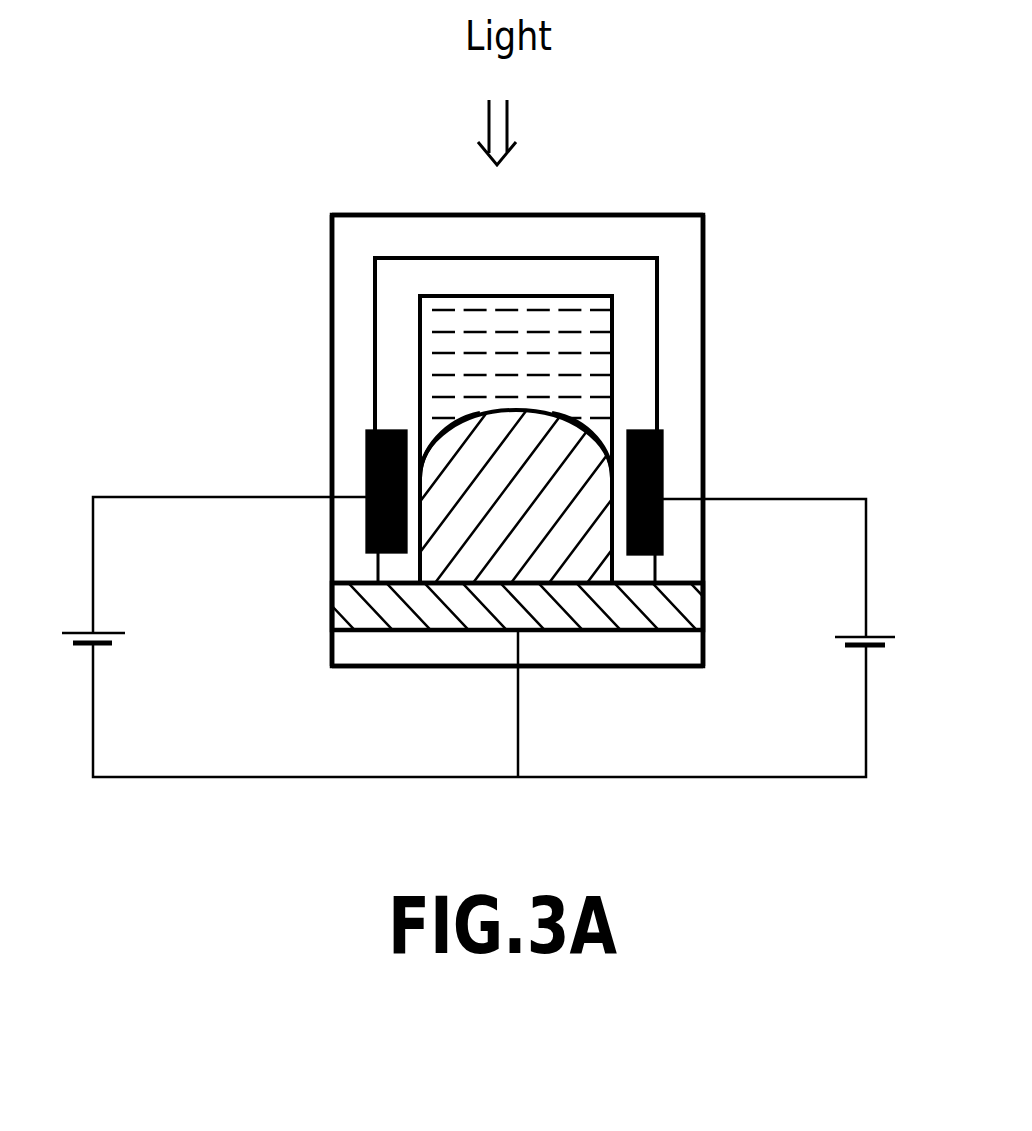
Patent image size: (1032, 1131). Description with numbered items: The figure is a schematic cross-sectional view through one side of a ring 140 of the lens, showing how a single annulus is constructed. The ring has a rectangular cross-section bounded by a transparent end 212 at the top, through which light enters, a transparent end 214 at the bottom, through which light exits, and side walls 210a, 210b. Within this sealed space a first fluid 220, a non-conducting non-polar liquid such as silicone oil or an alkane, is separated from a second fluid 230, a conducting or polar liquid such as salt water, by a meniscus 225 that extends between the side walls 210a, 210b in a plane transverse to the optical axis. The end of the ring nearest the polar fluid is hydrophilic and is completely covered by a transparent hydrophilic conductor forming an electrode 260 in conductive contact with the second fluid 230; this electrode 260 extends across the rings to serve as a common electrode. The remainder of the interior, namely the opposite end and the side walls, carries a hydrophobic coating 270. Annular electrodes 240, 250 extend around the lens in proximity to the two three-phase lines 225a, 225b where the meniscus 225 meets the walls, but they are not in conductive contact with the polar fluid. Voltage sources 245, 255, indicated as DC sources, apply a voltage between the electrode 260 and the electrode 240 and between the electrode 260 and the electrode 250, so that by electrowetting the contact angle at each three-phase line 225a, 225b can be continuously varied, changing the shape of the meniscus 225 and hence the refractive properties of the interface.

The ring 140 is at (690, 170).
The transparent end 212 is at (385, 213).
The side wall 210a is at (347, 325).
The side wall 210b is at (675, 315).
The transparent end 214 is at (487, 668).
The hydrophobic coating 270 is at (393, 283).
The first fluid 220 is at (572, 345).
The meniscus 225 is at (557, 417).
The three-phase line 225a is at (433, 443).
The three-phase line 225b is at (597, 445).
The annular electrode 240 is at (347, 473).
The annular electrode 250 is at (675, 475).
The second fluid 230 is at (430, 553).
The electrode 260 is at (588, 613).
The voltage source 245 is at (67, 632).
The voltage source 255 is at (888, 635).